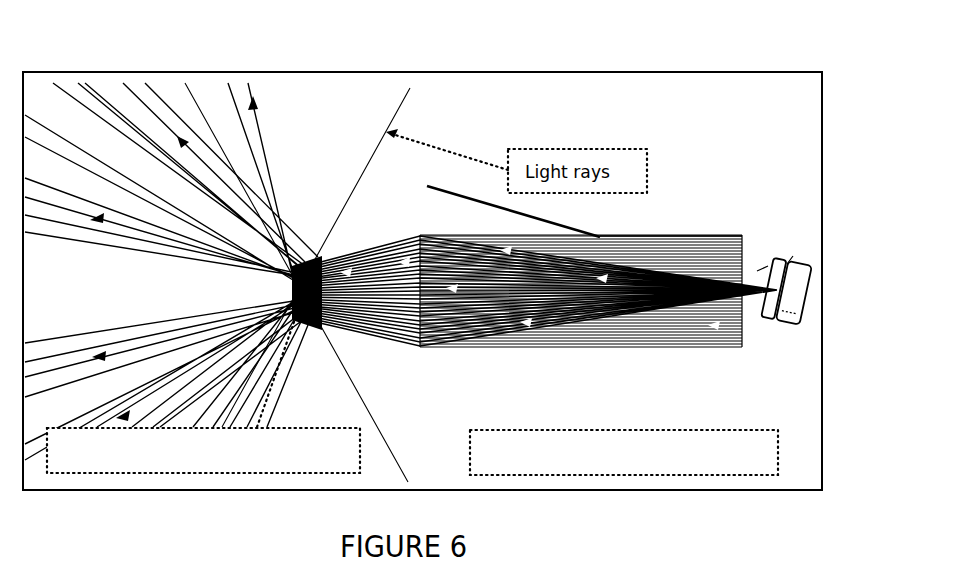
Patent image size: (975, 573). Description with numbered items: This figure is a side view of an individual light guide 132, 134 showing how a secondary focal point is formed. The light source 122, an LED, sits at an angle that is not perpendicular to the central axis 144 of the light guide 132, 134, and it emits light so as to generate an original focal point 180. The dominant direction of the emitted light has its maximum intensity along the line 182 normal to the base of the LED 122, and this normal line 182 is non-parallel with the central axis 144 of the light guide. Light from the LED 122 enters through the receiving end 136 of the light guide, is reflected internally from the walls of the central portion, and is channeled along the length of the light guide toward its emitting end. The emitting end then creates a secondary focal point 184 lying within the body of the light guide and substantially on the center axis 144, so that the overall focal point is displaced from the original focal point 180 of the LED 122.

The light source 122 is at (803, 288).
The light guide 132 is at (715, 127).
The light guide 134 is at (700, 232).
The receiving end 136 is at (735, 233).
The central axis 144 is at (600, 298).
The original focal point 180 is at (765, 303).
The normal line 182 is at (465, 198).
The secondary focal point 184 is at (192, 278).